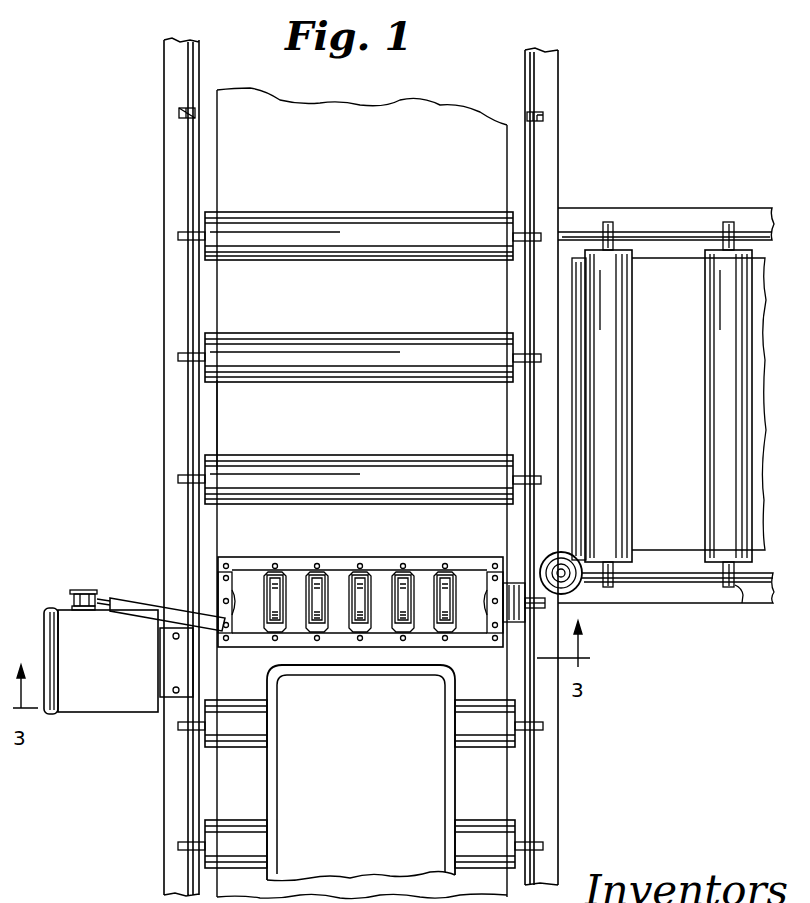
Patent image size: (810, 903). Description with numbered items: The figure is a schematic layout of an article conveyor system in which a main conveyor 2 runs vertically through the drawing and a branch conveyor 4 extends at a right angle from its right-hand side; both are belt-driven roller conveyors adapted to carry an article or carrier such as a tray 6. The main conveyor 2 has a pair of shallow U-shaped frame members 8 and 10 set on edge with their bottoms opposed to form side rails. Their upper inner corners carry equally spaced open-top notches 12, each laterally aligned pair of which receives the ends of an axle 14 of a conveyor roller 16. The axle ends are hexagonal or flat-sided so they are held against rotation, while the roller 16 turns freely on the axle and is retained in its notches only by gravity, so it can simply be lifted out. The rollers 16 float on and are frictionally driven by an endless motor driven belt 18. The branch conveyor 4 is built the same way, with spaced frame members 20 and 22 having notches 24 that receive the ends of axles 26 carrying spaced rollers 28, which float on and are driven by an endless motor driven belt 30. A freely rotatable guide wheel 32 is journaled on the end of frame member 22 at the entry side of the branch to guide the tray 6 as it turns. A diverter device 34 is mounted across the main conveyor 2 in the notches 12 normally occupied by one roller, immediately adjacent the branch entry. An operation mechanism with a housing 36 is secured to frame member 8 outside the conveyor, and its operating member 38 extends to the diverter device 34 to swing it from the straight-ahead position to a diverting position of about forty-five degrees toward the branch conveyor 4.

The main conveyor 2 is at (392, 101).
The branch conveyor 4 is at (736, 188).
The tray 6 is at (362, 766).
The frame member 8 is at (168, 85).
The frame member 10 is at (553, 95).
The notches 12 is at (183, 113).
The axle 14 is at (178, 237).
The conveyor roller 16 is at (390, 222).
The endless motor driven belt 18 is at (222, 432).
The frame member 20 is at (724, 213).
The frame member 22 is at (688, 600).
The notches 24 is at (738, 588).
The axles 26 is at (723, 588).
The rollers 28 is at (712, 420).
The endless motor driven belt 30 is at (656, 270).
The guide wheel 32 is at (574, 590).
The diverter device 34 is at (367, 547).
The housing 36 is at (120, 715).
The operating member 38 is at (135, 605).